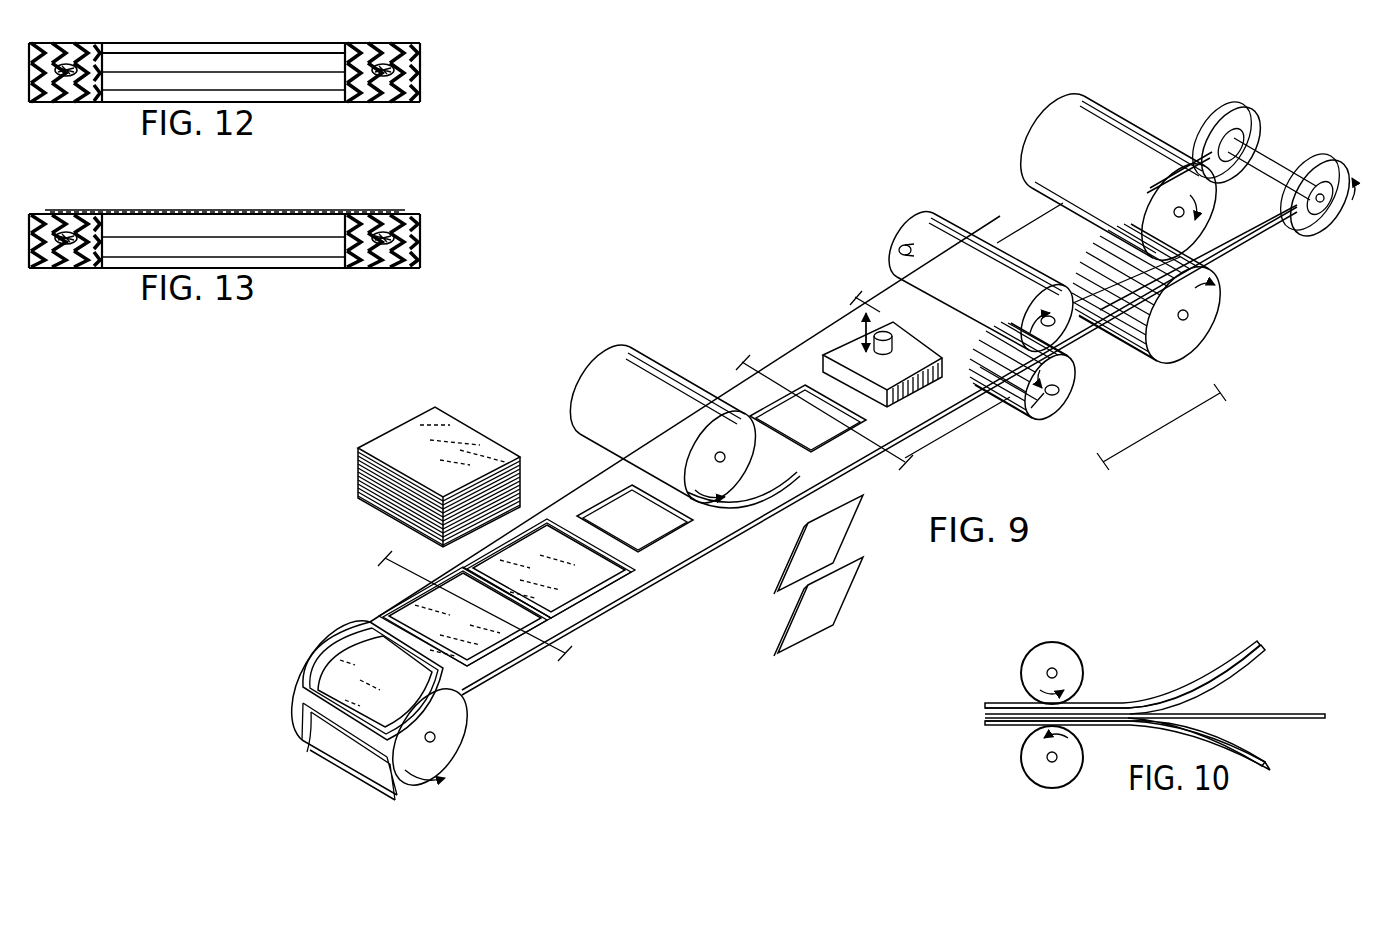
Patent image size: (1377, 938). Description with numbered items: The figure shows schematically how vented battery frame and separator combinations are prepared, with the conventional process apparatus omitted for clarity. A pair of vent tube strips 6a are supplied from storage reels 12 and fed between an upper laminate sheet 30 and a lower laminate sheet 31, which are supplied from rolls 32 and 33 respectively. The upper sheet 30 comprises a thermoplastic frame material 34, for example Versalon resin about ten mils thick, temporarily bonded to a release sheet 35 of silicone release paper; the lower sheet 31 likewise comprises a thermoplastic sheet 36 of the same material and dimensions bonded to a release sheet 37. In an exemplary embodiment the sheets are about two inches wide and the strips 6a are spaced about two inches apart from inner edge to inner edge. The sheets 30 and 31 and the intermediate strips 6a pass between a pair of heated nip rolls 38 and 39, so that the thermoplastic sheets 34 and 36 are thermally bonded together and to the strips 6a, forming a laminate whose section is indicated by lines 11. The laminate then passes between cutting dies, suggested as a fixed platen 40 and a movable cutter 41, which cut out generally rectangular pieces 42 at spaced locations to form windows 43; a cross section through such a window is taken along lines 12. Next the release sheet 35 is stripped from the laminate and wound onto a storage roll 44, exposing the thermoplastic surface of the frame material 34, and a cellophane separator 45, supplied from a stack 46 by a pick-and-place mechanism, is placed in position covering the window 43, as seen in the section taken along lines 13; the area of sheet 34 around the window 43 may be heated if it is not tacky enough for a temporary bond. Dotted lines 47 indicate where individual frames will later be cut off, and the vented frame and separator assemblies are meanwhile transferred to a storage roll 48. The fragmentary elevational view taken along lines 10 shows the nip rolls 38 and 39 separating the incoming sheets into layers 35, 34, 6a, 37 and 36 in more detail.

In FIG. 12, the vent tubes 6a is at (66, 68).
In FIG. 13, the vent tubes 6a is at (66, 236).
In FIG. 10, the vent tubes 6a is at (1278, 712).
In FIG. 9, the vent tubes 6a is at (1190, 150).
In FIG. 9, the section lines 10— 10 is at (1101, 461).
In FIG. 9, the section lines 11— 11 is at (846, 307).
In FIG. 9, the storage reels 12 is at (740, 366).
In FIG. 9, the section lines 13— 13 is at (380, 572).
In FIG. 10, the upper laminate sheet 30 is at (1242, 636).
In FIG. 9, the upper laminate sheet 30 is at (1062, 232).
In FIG. 10, the lower laminate sheet 31 is at (1282, 770).
In FIG. 9, the lower laminate sheet 31 is at (1093, 340).
In FIG. 9, the roll 32 is at (1120, 108).
In FIG. 9, the roll 33 is at (1220, 325).
In FIG. 12, the frame material 34 is at (408, 68).
In FIG. 13, the frame material 34 is at (408, 232).
In FIG. 10, the frame material 34 is at (1252, 660).
In FIG. 9, the frame material 34 is at (722, 535).
In FIG. 12, the release sheet 35 is at (412, 50).
In FIG. 10, the release sheet 35 is at (1232, 654).
In FIG. 9, the release sheet 35 is at (775, 493).
In FIG. 12, the sheet 36 is at (410, 90).
In FIG. 13, the sheet 36 is at (410, 254).
In FIG. 10, the sheet 36 is at (1240, 748).
In FIG. 12, the release sheet 37 is at (372, 96).
In FIG. 13, the release sheet 37 is at (372, 260).
In FIG. 10, the release sheet 37 is at (1132, 730).
In FIG. 10, the heated nip roll 38 is at (1080, 760).
In FIG. 9, the heated nip roll 38 is at (1062, 388).
In FIG. 10, the heated nip roll 39 is at (1078, 663).
In FIG. 9, the heated nip roll 39 is at (1012, 280).
In FIG. 9, the fixed platen 40 is at (952, 420).
In FIG. 9, the movable cutter 41 is at (912, 350).
In FIG. 9, the rectangular pieces 42 is at (848, 528).
In FIG. 12, the windows 43 is at (112, 82).
In FIG. 13, the windows 43 is at (112, 248).
In FIG. 9, the windows 43 is at (618, 505).
In FIG. 9, the storage roll 44 is at (645, 372).
In FIG. 13, the cellophane separator 45 is at (263, 210).
In FIG. 9, the cellophane separator 45 is at (540, 585).
In FIG. 9, the stack 46 is at (350, 455).
In FIG. 9, the dotted lines 47 is at (360, 618).
In FIG. 9, the storage roll 48 is at (332, 748).